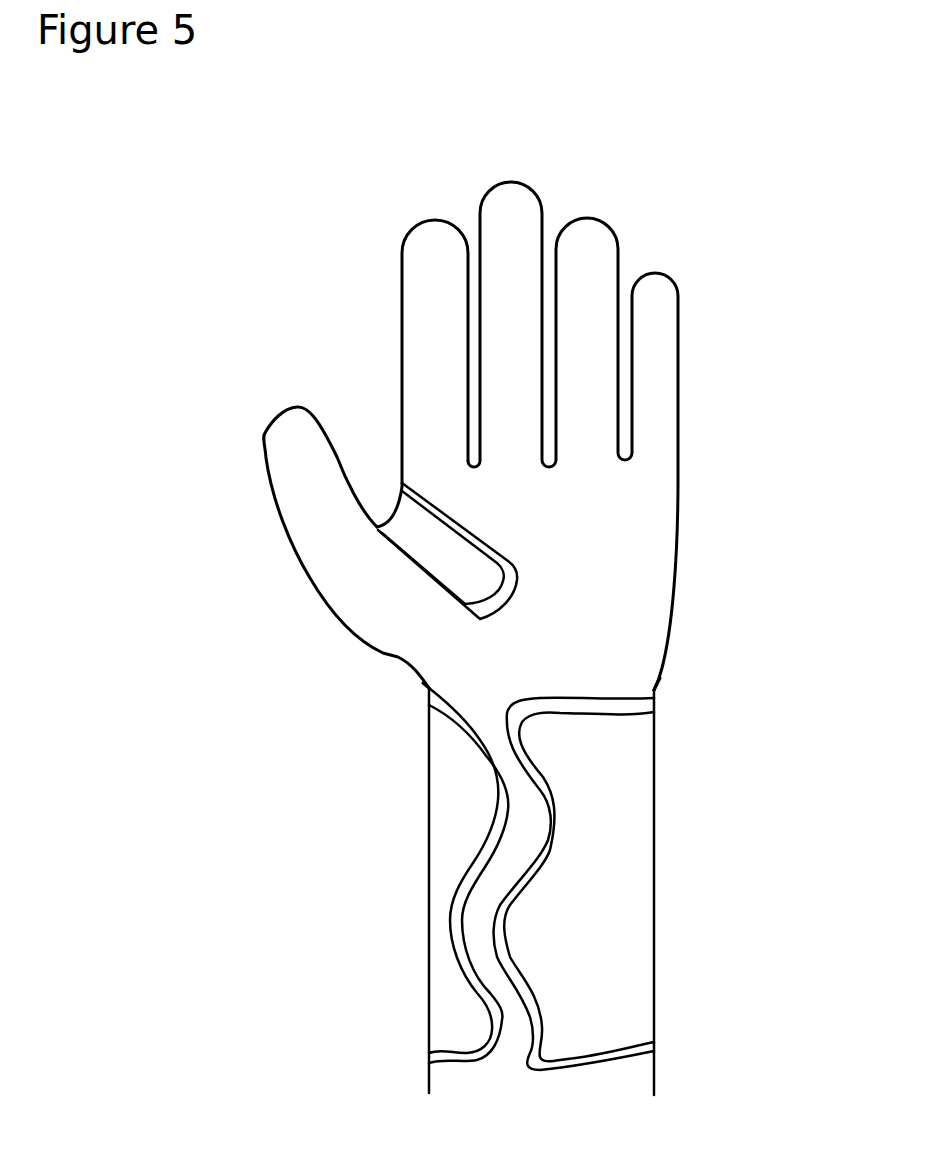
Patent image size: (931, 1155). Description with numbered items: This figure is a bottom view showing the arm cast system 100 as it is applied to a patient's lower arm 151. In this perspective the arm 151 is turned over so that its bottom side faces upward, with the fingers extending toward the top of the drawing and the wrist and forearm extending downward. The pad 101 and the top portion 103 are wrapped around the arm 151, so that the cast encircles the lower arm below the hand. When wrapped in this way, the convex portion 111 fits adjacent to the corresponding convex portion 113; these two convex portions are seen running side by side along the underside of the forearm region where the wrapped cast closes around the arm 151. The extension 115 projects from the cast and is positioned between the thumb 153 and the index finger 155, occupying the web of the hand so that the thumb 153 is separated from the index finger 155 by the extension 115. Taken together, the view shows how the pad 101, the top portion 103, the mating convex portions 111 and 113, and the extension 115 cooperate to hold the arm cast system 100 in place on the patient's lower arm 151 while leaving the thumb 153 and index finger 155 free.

The arm cast system 100 is at (493, 638).
The pad 101 is at (430, 700).
The top portion 103 is at (567, 888).
The convex portion 111 is at (530, 932).
The convex portion 113 is at (442, 932).
The extension 115 is at (412, 528).
The lower arm 151 is at (578, 655).
The thumb 153 is at (280, 503).
The index finger 155 is at (403, 312).